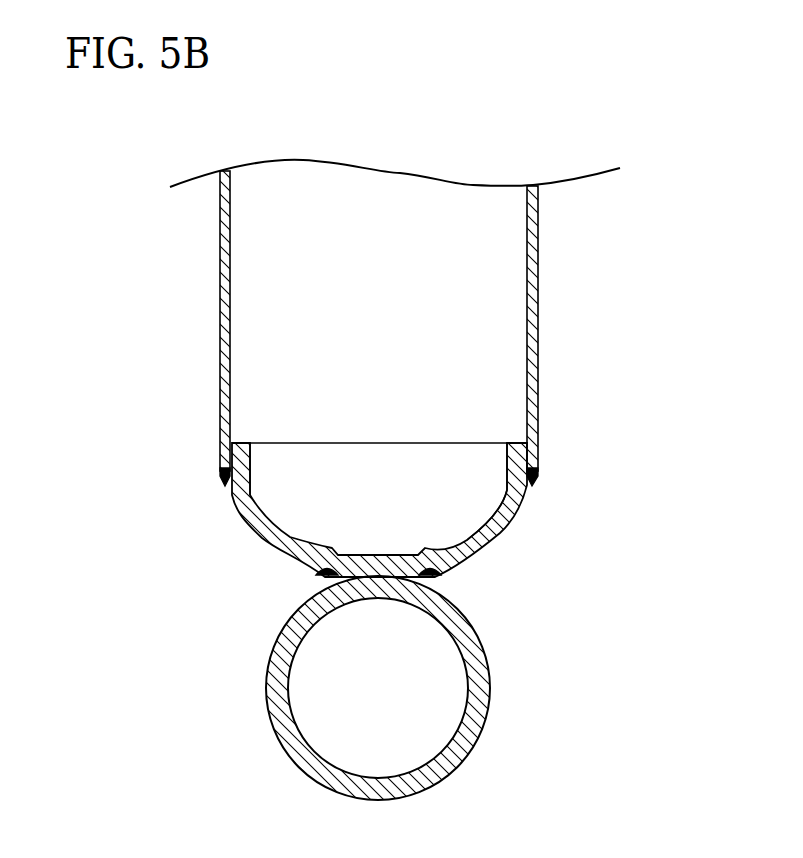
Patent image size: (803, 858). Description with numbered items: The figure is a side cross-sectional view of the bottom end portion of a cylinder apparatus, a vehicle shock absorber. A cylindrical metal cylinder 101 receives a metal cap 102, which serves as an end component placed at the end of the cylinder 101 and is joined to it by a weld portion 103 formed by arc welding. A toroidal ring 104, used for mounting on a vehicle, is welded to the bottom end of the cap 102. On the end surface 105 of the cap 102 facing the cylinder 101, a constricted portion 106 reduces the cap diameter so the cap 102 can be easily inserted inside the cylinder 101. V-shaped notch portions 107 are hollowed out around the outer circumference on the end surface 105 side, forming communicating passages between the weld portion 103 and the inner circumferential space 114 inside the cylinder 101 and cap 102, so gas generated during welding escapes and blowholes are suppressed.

The cylinder 101 is at (538, 258).
The inner circumferential space 114 is at (483, 352).
The cap 102 is at (502, 537).
The weld portion 103 is at (530, 477).
The ring 104 is at (492, 683).
The end surface 105 is at (243, 440).
The constricted portion 106 is at (222, 455).
The notch portion 107 is at (525, 450).